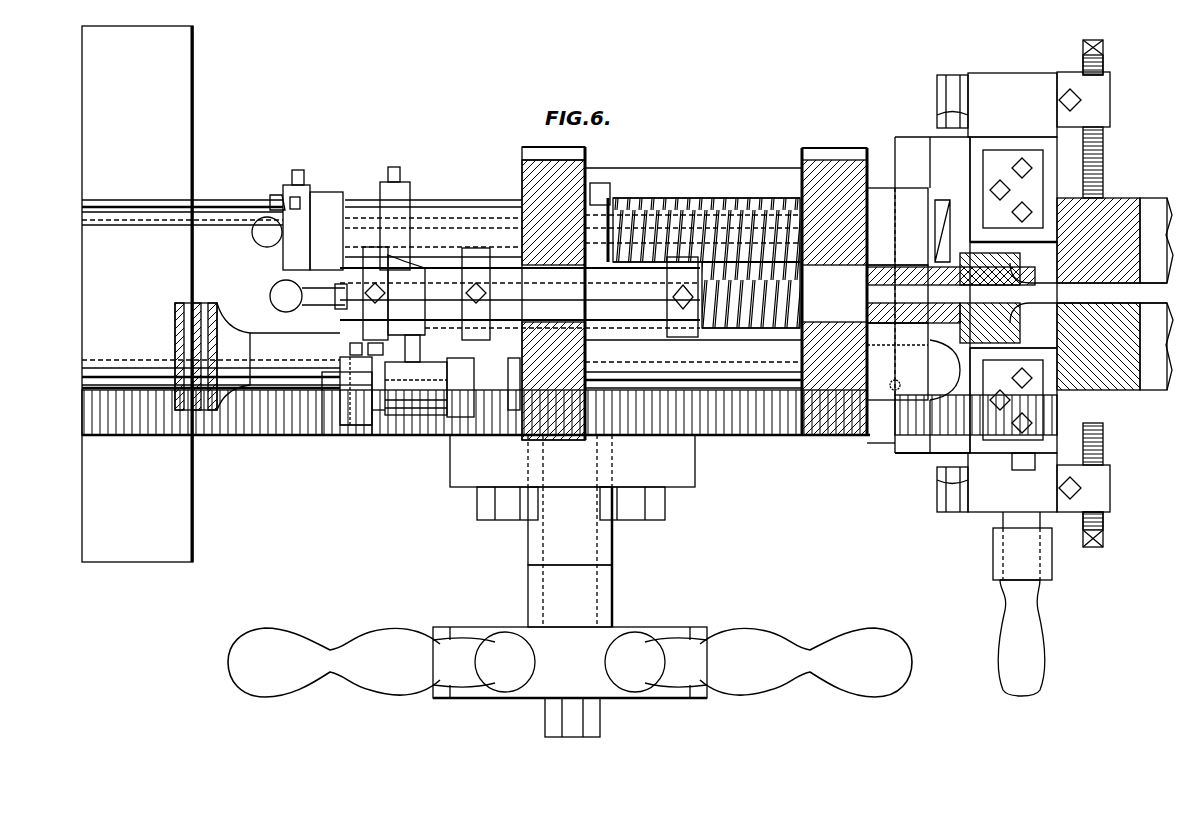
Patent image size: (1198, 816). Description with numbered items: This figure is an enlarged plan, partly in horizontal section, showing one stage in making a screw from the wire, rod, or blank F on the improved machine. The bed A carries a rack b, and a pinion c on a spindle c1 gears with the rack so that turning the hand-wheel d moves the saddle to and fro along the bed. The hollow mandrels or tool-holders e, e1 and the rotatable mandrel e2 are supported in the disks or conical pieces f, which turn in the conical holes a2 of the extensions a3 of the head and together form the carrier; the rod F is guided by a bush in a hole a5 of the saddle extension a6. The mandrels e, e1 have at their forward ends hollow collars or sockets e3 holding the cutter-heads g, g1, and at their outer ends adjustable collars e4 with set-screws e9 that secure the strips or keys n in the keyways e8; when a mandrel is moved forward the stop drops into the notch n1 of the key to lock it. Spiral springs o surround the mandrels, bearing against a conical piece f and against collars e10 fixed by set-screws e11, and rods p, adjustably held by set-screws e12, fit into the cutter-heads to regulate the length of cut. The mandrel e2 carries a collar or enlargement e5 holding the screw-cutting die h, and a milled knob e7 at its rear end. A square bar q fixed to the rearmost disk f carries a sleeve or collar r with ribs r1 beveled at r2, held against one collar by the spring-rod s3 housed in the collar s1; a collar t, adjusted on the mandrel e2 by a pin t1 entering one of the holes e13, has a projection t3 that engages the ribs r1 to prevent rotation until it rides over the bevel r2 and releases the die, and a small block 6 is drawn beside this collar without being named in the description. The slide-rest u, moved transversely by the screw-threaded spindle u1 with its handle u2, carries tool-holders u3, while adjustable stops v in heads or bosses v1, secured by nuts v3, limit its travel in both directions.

The conical holes a2 is at (585, 160).
The extensions of the head a3 is at (555, 160).
The hole a5 is at (1174, 294).
The extension of the saddle a6 is at (1098, 294).
The bed A is at (1153, 294).
The rack b is at (738, 435).
The pinion c is at (572, 476).
The spindle c1 is at (565, 565).
The hand-wheel d is at (570, 682).
The mandrel or tool-holder e is at (632, 205).
The mandrel or tool-holder e1 is at (880, 294).
The mandrel or tool-holder e2 is at (442, 364).
The hollow collar or socket e3 is at (951, 315).
The collar e4 is at (386, 261).
The collar or enlargement e5 is at (470, 200).
The milled head or knob e7 is at (176, 343).
The keyway or groove e8 is at (592, 320).
The set-screw e9 is at (298, 170).
The collar e10 is at (645, 284).
The set-screw e11 is at (608, 190).
The set-screw e12 is at (318, 190).
The holes e13 is at (356, 343).
The disks or conical pieces f is at (694, 293).
The wire, rod, or blank F is at (1098, 293).
The cutter-head g is at (945, 221).
The cutter-head g1 is at (1015, 293).
The die h is at (976, 387).
The strip or key n is at (268, 210).
The notch n1 is at (897, 343).
The spiral springs o is at (750, 338).
The rods p is at (320, 300).
The rod or bar q is at (340, 388).
The sleeve or collar r is at (416, 393).
The ribs or feathers r1 is at (408, 440).
The beveled or cut-away portion r2 is at (432, 440).
The collar s1 is at (356, 391).
The rod or plunger s3 is at (375, 430).
The collar t is at (416, 388).
The pin t1 is at (418, 348).
The projection t3 is at (356, 380).
The block 6 is at (460, 387).
The slide-rest u is at (976, 324).
The screw-threaded spindle u1 is at (1022, 528).
The handle u2 is at (1027, 469).
The tool-holder u3 is at (1013, 295).
The adjustable stops v is at (1107, 165).
The heads or bosses v1 is at (1110, 85).
The nuts v3 is at (950, 75).